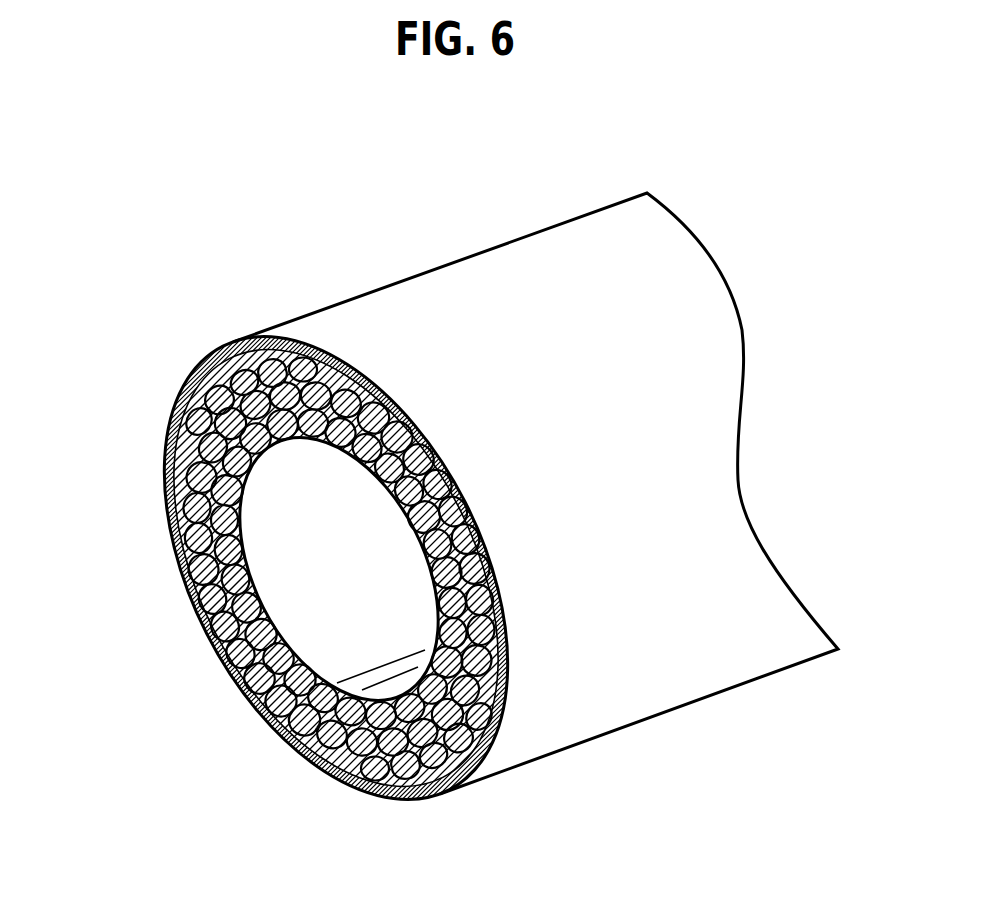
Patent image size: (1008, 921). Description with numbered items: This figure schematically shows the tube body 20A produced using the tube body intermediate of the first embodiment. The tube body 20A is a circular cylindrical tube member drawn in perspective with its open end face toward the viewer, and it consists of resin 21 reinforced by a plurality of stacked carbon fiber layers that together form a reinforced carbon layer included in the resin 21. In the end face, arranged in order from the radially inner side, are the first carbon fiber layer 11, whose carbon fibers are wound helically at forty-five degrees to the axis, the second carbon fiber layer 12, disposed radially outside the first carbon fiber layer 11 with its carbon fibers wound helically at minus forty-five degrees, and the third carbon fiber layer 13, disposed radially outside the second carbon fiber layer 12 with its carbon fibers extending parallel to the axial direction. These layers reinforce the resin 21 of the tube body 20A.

The tube body 20A is at (158, 177).
The resin 21 is at (521, 268).
The third carbon fiber layer 13 is at (287, 338).
The second carbon fiber layer 12 is at (218, 438).
The first carbon fiber layer 11 is at (358, 712).